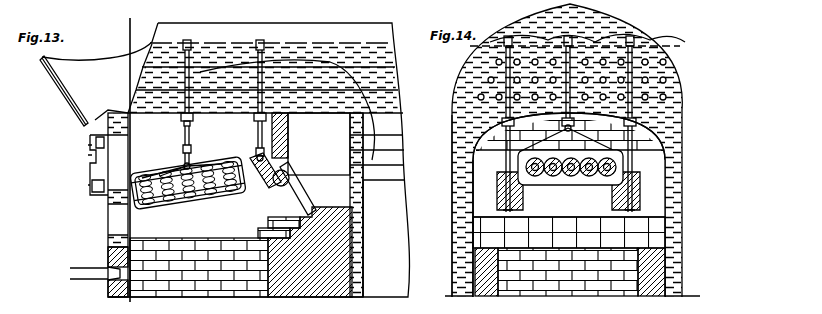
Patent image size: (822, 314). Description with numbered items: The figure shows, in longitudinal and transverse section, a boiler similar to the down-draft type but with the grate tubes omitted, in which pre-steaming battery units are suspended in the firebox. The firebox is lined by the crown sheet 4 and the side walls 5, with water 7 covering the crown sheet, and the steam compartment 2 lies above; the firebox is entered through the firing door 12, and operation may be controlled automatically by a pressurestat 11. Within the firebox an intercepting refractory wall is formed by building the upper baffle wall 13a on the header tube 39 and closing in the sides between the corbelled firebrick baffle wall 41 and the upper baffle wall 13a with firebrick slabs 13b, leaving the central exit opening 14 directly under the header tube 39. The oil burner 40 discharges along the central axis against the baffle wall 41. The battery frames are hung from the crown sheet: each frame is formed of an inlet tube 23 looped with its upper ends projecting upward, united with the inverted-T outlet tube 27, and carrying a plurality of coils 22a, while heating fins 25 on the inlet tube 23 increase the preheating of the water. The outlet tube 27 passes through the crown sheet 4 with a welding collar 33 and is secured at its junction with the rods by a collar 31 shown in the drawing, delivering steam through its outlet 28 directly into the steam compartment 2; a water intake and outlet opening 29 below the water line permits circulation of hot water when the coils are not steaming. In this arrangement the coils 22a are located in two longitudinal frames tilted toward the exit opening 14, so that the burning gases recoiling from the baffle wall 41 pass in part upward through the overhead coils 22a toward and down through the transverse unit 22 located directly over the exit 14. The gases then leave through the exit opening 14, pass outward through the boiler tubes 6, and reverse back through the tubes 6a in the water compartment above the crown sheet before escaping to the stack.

In FIG. 13, the steam compartment 2 is at (345, 33).
In FIG. 14, the steam compartment 2 is at (653, 41).
In FIG. 13, the crown sheet 4 is at (152, 122).
In FIG. 13, the side walls 5 is at (120, 133).
In FIG. 14, the side walls 5 is at (468, 162).
In FIG. 13, the boiler tubes 6 is at (397, 140).
In FIG. 13, the tubes 6a is at (360, 80).
In FIG. 13, the water 7 is at (94, 200).
In FIG. 14, the water 7 is at (462, 128).
In FIG. 14, the pressurestat 11 is at (500, 128).
In FIG. 13, the firing door 12 is at (128, 5).
In FIG. 13, the upper baffle wall 13a is at (296, 136).
In FIG. 14, the upper baffle wall 13a is at (668, 140).
In FIG. 13, the firebrick slabs 13b is at (302, 182).
In FIG. 14, the firebrick slabs 13b is at (645, 192).
In FIG. 13, the exit opening 14 is at (145, 16).
In FIG. 14, the exit opening 14 is at (577, 204).
In FIG. 13, the battery unit 22 is at (251, 152).
In FIG. 14, the battery unit 22 is at (568, 128).
In FIG. 13, the coils 22a is at (188, 200).
In FIG. 14, the coils 22a is at (595, 205).
In FIG. 13, the inlet tube 23 is at (249, 146).
In FIG. 13, the heating fins 25 is at (170, 205).
In FIG. 14, the heating fins 25 is at (610, 150).
In FIG. 13, the outlet tube 27 is at (262, 72).
In FIG. 14, the outlet tube 27 is at (577, 87).
In FIG. 13, the outlet 28 is at (263, 43).
In FIG. 14, the outlet 28 is at (577, 36).
In FIG. 13, the water intake and outlet opening 29 is at (257, 44).
In FIG. 14, the water intake and outlet opening 29 is at (556, 135).
In FIG. 13, the collar 31 is at (180, 123).
In FIG. 13, the welding collar 33 is at (254, 118).
In FIG. 14, the welding collar 33 is at (598, 123).
In FIG. 13, the header tube 39 is at (277, 186).
In FIG. 14, the header tube 39 is at (655, 172).
In FIG. 13, the oil burner 40 is at (84, 268).
In FIG. 13, the corbelled firebrick baffle wall 41 is at (352, 215).
In FIG. 14, the corbelled firebrick baffle wall 41 is at (655, 236).